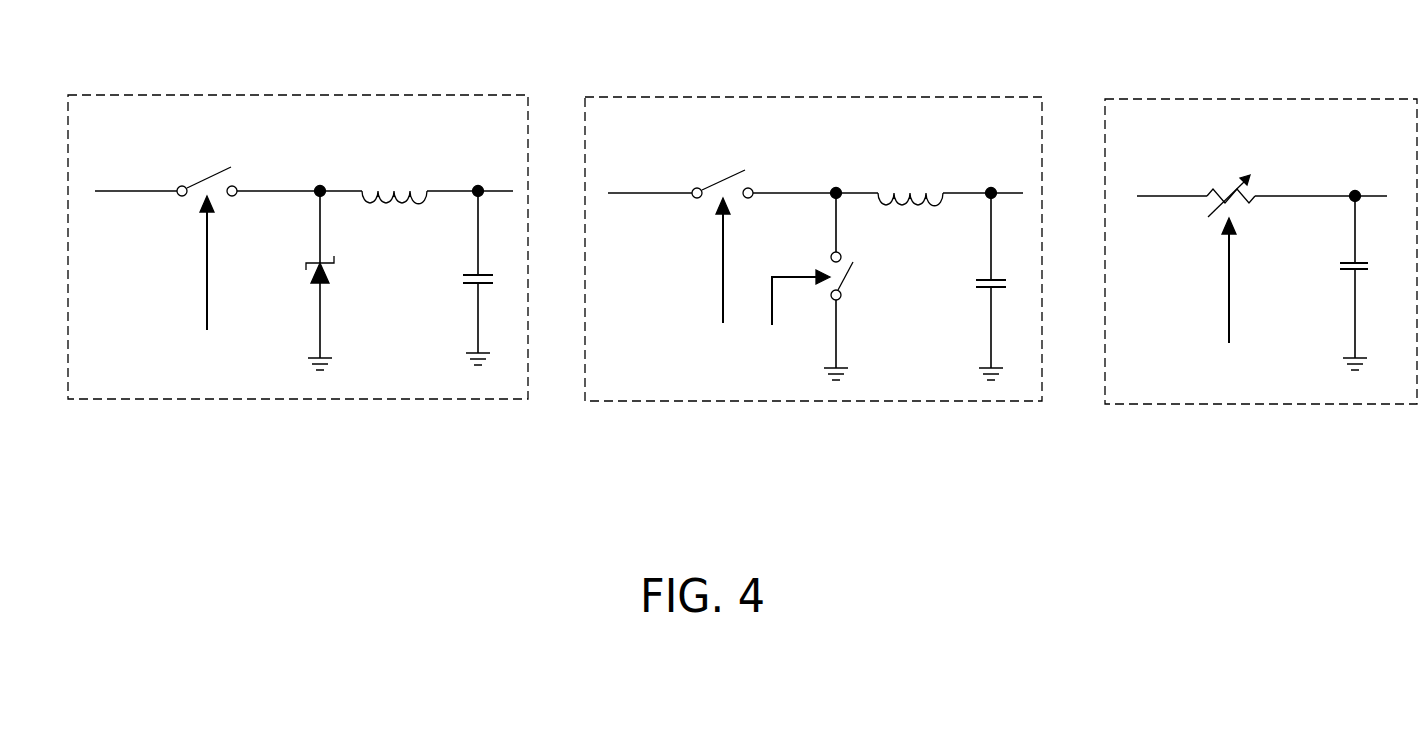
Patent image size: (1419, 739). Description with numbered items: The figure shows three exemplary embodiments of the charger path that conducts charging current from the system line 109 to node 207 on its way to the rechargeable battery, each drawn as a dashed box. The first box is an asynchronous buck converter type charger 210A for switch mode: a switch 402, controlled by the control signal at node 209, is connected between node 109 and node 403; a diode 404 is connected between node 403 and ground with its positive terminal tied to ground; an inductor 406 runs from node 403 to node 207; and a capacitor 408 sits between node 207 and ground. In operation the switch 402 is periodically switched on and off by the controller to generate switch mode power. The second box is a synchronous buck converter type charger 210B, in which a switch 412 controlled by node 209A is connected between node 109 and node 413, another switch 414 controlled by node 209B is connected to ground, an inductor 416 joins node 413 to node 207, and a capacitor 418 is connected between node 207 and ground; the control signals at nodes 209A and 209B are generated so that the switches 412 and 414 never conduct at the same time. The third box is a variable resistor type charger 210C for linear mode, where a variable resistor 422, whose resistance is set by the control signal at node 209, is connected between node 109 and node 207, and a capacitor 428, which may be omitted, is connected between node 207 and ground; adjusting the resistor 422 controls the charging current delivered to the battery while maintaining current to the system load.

The system line 109 is at (120, 193).
The node 207 is at (478, 186).
The node 209 is at (207, 325).
The node 209A is at (723, 320).
The node 209B is at (772, 325).
The asynchronous buck converter type charger 210A is at (165, 86).
The synchronous buck converter type charger 210B is at (678, 86).
The variable resistor type charger 210C is at (1198, 90).
The switch 402 is at (207, 176).
The node 403 is at (322, 188).
The diode 404 is at (312, 275).
The inductor 406 is at (420, 210).
The capacitor 408 is at (473, 285).
The switch 412 is at (722, 178).
The node 413 is at (838, 190).
The switch 414 is at (847, 280).
The inductor 416 is at (935, 212).
The capacitor 418 is at (983, 290).
The variable resistor 422 is at (1207, 190).
The capacitor 428 is at (1343, 272).